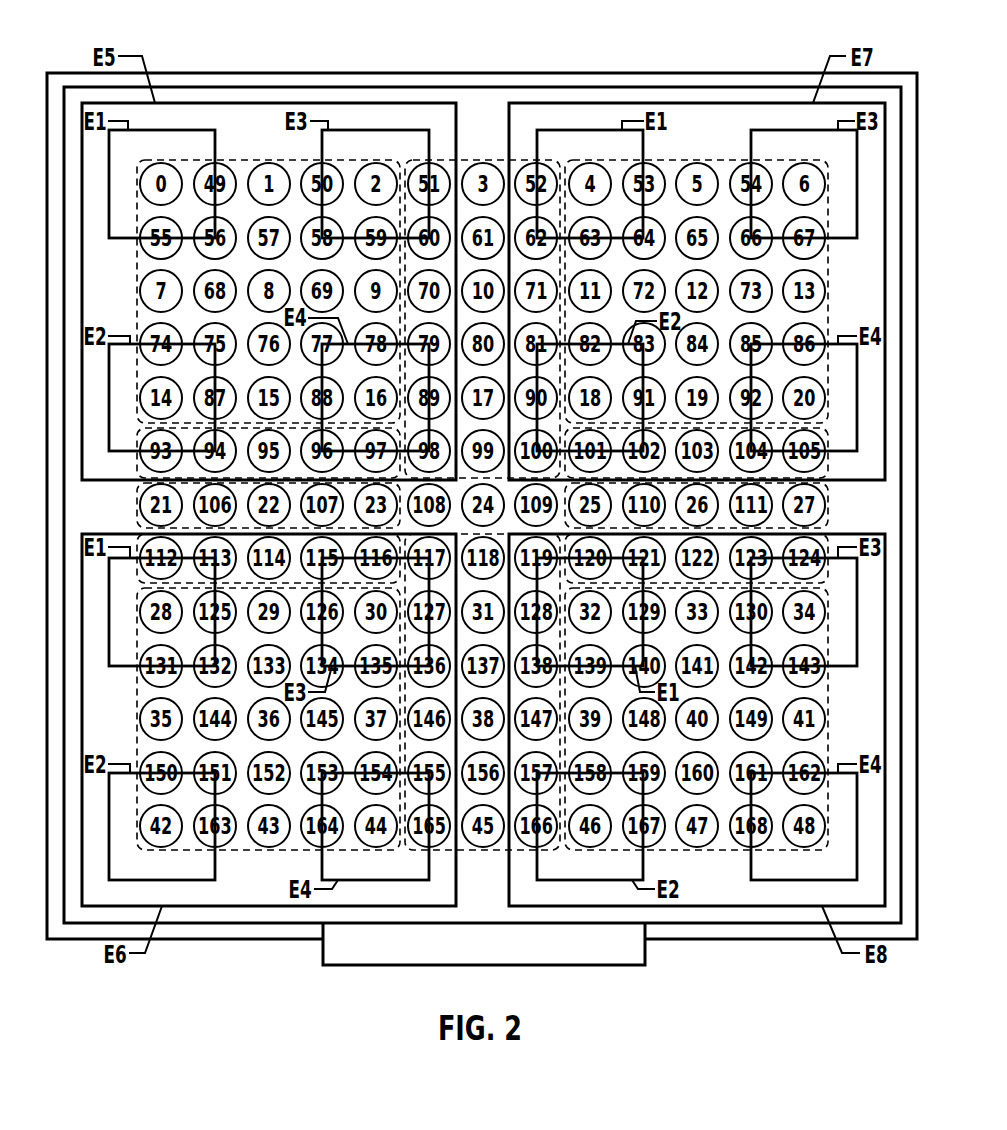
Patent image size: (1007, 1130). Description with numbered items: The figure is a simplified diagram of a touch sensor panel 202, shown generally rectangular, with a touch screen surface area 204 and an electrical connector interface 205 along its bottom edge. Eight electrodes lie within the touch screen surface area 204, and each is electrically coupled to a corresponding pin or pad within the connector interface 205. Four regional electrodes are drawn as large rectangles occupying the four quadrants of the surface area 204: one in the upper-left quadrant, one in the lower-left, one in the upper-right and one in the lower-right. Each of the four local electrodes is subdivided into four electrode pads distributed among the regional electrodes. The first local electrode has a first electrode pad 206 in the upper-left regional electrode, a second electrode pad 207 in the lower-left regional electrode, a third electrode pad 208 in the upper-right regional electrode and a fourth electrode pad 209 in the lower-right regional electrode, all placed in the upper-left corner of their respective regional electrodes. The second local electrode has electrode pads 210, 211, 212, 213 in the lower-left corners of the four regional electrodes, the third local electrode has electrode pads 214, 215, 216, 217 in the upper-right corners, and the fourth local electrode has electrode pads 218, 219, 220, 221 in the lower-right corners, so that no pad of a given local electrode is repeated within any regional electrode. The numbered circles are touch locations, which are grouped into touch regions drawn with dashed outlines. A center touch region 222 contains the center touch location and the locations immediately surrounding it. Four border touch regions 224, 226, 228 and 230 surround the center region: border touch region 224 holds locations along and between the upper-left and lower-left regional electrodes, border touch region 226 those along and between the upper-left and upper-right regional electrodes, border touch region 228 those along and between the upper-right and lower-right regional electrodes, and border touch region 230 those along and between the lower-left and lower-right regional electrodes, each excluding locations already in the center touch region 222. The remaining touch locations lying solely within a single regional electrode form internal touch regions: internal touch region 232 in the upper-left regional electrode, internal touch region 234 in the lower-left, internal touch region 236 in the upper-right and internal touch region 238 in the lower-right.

The touch sensor panel 202 is at (738, 73).
The touch screen surface area 204 is at (665, 87).
The electrical connector interface 205 is at (470, 955).
The first electrode pad 206 is at (149, 157).
The second electrode pad 207 is at (135, 675).
The third electrode pad 208 is at (577, 157).
The fourth electrode pad 209 is at (643, 633).
The first electrode pad 210 is at (137, 452).
The second electrode pad 211 is at (149, 874).
The third electrode pad 212 is at (643, 370).
The fourth electrode pad 213 is at (577, 874).
The first electrode pad 214 is at (363, 157).
The second electrode pad 215 is at (322, 633).
The third electrode pad 216 is at (791, 157).
The fourth electrode pad 217 is at (850, 666).
The first electrode pad 218 is at (322, 368).
The second electrode pad 219 is at (363, 874).
The third electrode pad 220 is at (828, 456).
The fourth electrode pad 221 is at (791, 874).
The center touch region 222 is at (828, 483).
The border touch region 224 is at (137, 490).
The border touch region 226 is at (465, 160).
The border touch region 228 is at (828, 513).
The border touch region 230 is at (465, 850).
The internal touch region 232 is at (237, 160).
The internal touch region 234 is at (237, 850).
The internal touch region 236 is at (688, 160).
The internal touch region 238 is at (690, 850).